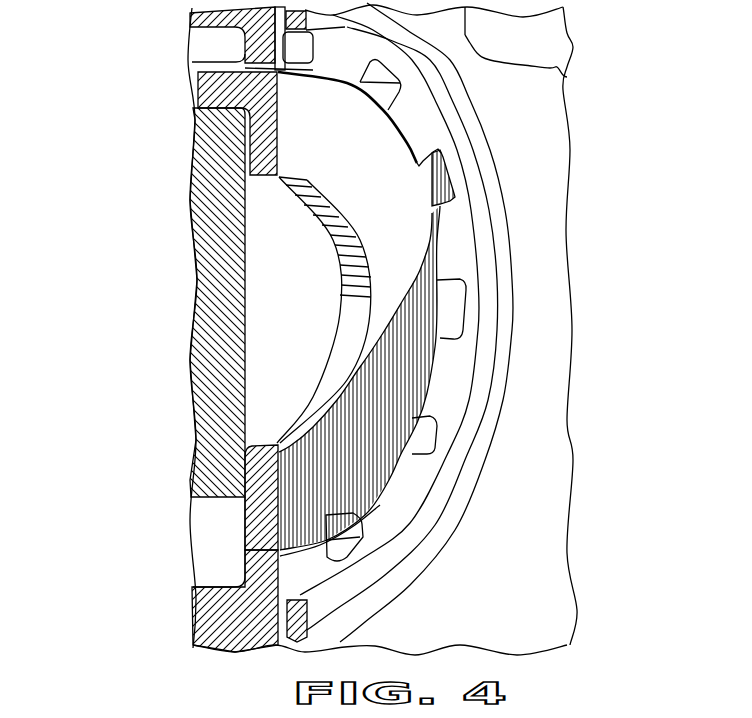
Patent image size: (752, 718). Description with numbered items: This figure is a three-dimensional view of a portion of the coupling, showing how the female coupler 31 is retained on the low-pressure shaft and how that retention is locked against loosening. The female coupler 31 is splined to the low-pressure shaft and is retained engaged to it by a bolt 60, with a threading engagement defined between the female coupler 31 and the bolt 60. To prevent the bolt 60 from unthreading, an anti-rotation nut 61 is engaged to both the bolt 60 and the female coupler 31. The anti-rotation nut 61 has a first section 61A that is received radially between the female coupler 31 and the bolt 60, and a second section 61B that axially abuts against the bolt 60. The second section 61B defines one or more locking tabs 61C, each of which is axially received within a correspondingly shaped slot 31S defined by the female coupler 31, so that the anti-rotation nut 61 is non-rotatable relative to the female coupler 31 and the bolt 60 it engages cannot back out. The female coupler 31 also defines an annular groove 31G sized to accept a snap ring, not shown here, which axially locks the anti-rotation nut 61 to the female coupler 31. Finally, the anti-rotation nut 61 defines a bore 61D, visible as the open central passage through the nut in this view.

The female coupler 31 is at (346, 329).
The slot 31S is at (298, 50).
The annular groove 31G is at (200, 640).
The bolt 60 is at (213, 245).
The anti-rotation nut 61 is at (357, 311).
The first section 61A is at (218, 87).
The second section 61B is at (400, 226).
The locking tab 61C is at (440, 175).
The bore 61D is at (313, 410).